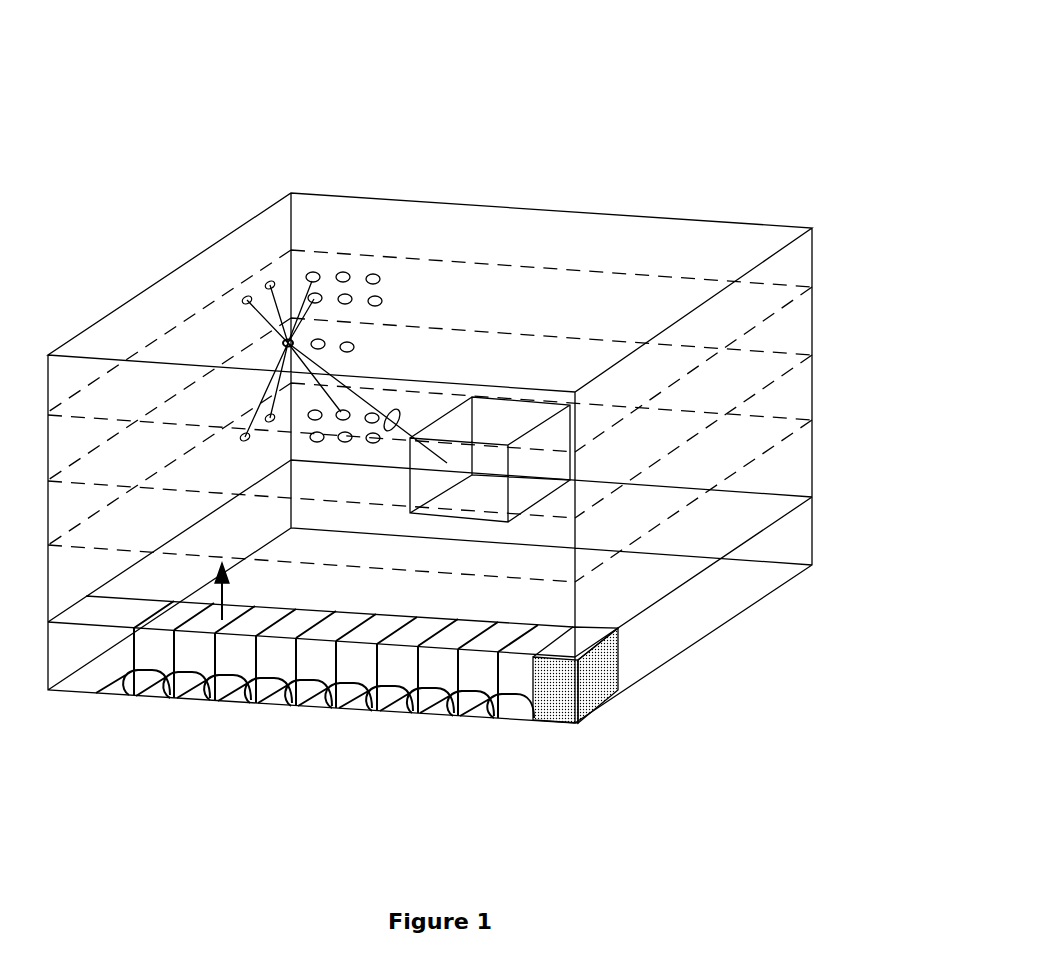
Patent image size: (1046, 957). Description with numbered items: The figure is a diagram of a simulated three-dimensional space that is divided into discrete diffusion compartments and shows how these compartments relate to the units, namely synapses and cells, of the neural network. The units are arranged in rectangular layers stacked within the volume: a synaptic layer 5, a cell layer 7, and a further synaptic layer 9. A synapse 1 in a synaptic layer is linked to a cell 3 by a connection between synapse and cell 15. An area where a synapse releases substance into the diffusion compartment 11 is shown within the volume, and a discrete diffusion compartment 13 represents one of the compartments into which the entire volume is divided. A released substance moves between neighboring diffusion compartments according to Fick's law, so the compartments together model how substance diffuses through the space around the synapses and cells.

The synapse 1 is at (376, 273).
The cell 3 is at (348, 343).
The synaptic layer 5 is at (787, 303).
The cell layer 7 is at (775, 382).
The synaptic layer 9 is at (752, 457).
The area where a synapse releases substance into the diffusion compartment 11 is at (495, 485).
The discrete diffusion compartment 13 is at (197, 660).
The connection between synapse and cell 15 is at (397, 414).